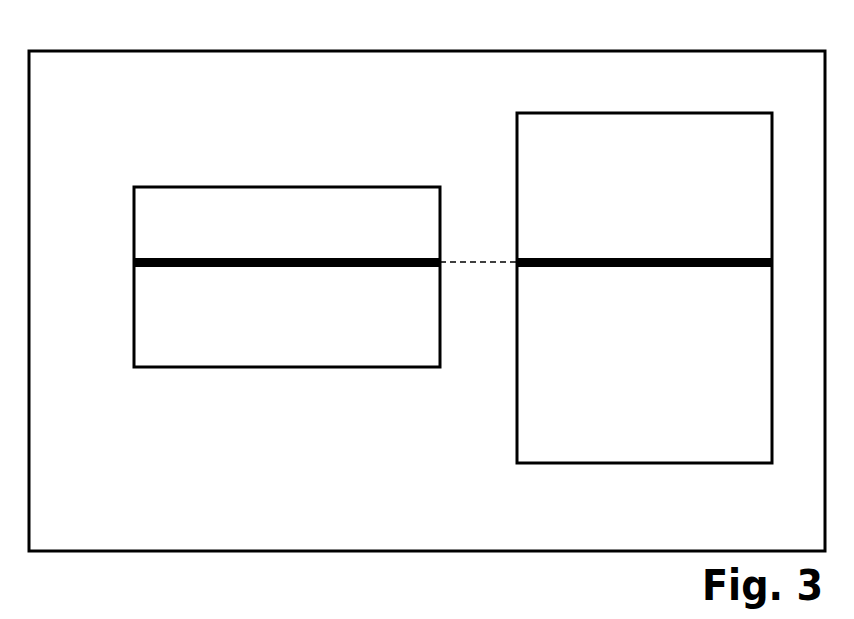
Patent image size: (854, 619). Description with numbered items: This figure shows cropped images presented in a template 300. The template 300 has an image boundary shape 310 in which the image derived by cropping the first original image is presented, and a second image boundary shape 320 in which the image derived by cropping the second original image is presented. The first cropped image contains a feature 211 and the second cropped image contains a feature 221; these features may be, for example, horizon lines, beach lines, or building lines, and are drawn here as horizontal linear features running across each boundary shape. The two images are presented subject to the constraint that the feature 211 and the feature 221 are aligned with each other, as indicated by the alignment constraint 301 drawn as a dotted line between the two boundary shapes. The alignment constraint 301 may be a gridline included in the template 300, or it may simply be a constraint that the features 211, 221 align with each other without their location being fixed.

The template 300 is at (435, 51).
The image boundary shape 310 is at (284, 186).
The feature 211 is at (283, 258).
The second image boundary shape 320 is at (641, 112).
The feature 221 is at (642, 258).
The alignment constraint 301 is at (469, 259).